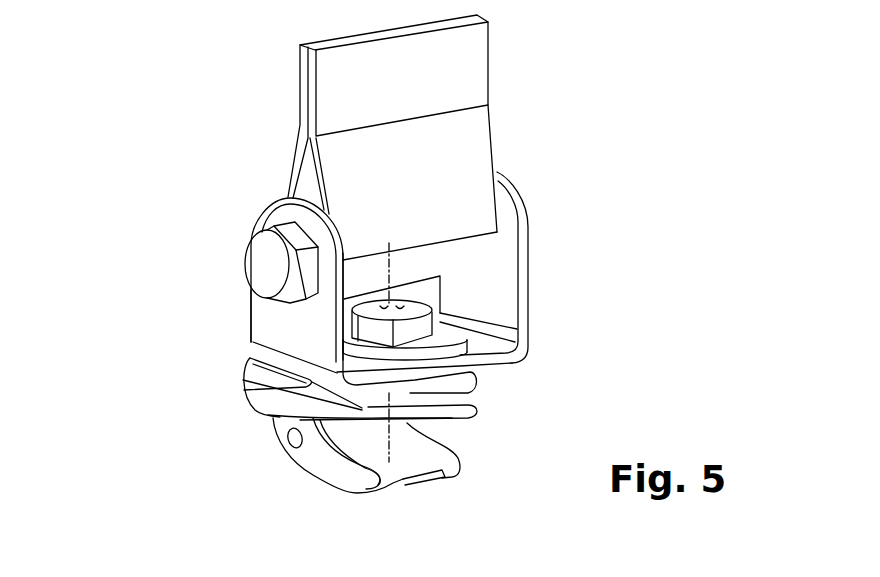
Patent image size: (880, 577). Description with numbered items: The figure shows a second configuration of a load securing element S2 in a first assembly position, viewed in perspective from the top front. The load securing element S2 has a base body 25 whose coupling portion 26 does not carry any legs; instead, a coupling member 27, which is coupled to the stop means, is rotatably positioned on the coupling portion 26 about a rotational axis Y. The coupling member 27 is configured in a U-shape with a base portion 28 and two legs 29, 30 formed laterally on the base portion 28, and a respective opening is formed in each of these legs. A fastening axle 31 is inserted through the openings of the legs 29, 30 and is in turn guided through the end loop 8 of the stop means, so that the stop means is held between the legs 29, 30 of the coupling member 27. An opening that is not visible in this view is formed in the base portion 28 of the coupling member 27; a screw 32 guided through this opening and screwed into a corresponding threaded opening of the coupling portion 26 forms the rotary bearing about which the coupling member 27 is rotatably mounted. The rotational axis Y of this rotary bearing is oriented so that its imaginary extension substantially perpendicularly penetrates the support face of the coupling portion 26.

The end loop 8 is at (447, 147).
The base body 25 is at (262, 440).
The coupling portion 26 is at (257, 380).
The coupling member 27 is at (510, 362).
The base portion 28 is at (477, 347).
The leg 29 is at (272, 327).
The leg 30 is at (498, 293).
The fastening axle 31 is at (266, 252).
The screw 32 is at (397, 311).
The load securing element S2 is at (223, 227).
The rotational axis Y is at (388, 262).